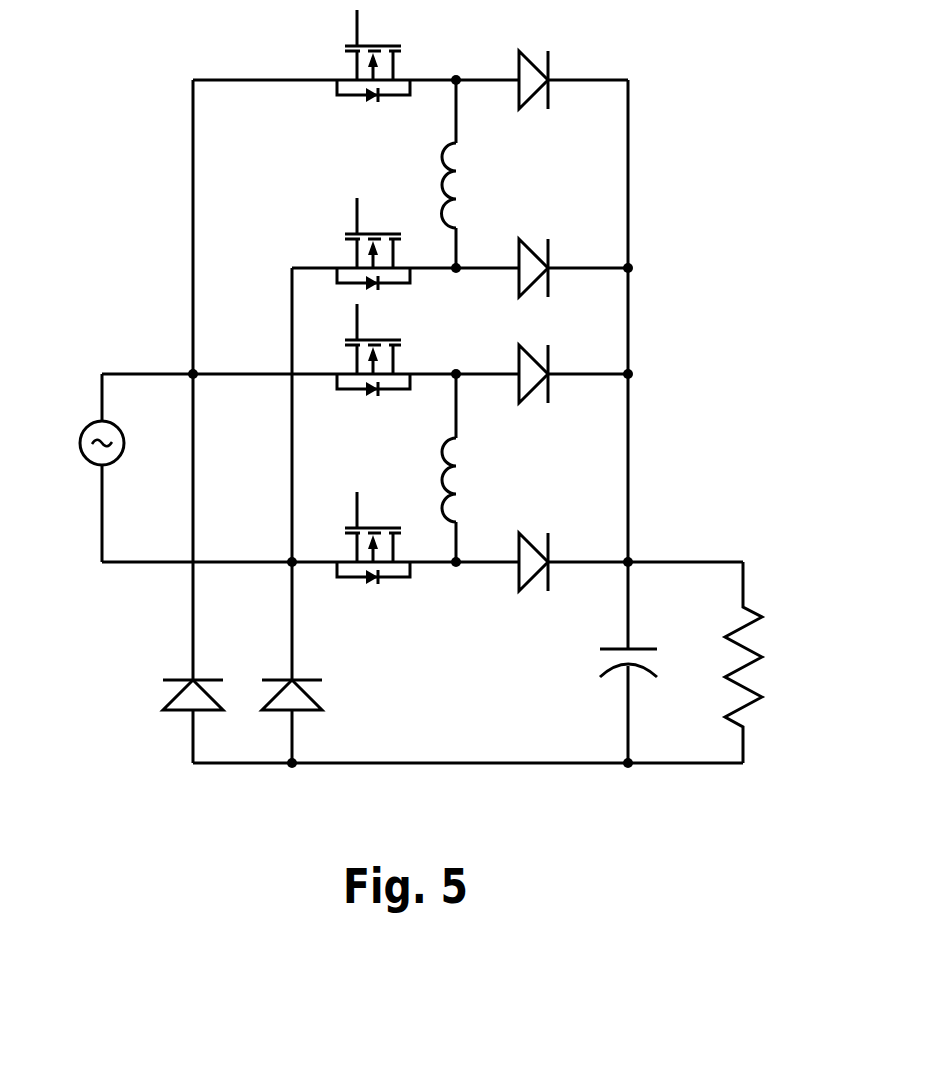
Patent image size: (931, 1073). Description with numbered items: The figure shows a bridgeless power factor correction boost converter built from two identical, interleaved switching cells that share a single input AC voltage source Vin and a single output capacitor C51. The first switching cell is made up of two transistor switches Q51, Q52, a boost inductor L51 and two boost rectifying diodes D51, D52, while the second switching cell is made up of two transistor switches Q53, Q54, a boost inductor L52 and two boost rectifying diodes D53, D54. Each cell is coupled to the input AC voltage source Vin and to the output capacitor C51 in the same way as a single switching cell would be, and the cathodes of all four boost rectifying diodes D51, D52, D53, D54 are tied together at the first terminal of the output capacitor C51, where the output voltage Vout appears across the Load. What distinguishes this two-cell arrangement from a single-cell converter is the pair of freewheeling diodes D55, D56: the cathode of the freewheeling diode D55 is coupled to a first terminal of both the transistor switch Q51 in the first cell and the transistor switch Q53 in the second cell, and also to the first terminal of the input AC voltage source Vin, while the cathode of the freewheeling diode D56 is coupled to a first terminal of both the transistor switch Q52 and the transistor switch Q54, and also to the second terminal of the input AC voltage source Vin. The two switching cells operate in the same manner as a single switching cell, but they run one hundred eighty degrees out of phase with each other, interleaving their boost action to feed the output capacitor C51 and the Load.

The transistor switch Q51 is at (356, 55).
The transistor switch Q52 is at (356, 243).
The transistor switch Q53 is at (356, 349).
The transistor switch Q54 is at (356, 537).
The boost rectifying diode D51 is at (535, 62).
The boost rectifying diode D52 is at (536, 249).
The boost rectifying diode D53 is at (536, 355).
The boost rectifying diode D54 is at (536, 583).
The freewheeling diode D55 is at (161, 694).
The freewheeling diode D56 is at (320, 694).
The boost inductor L51 is at (475, 185).
The boost inductor L52 is at (477, 480).
The output capacitor C51 is at (601, 664).
The AC input voltage source Vin is at (76, 468).
The output voltage Vout is at (797, 611).
The load resistor Load is at (774, 662).